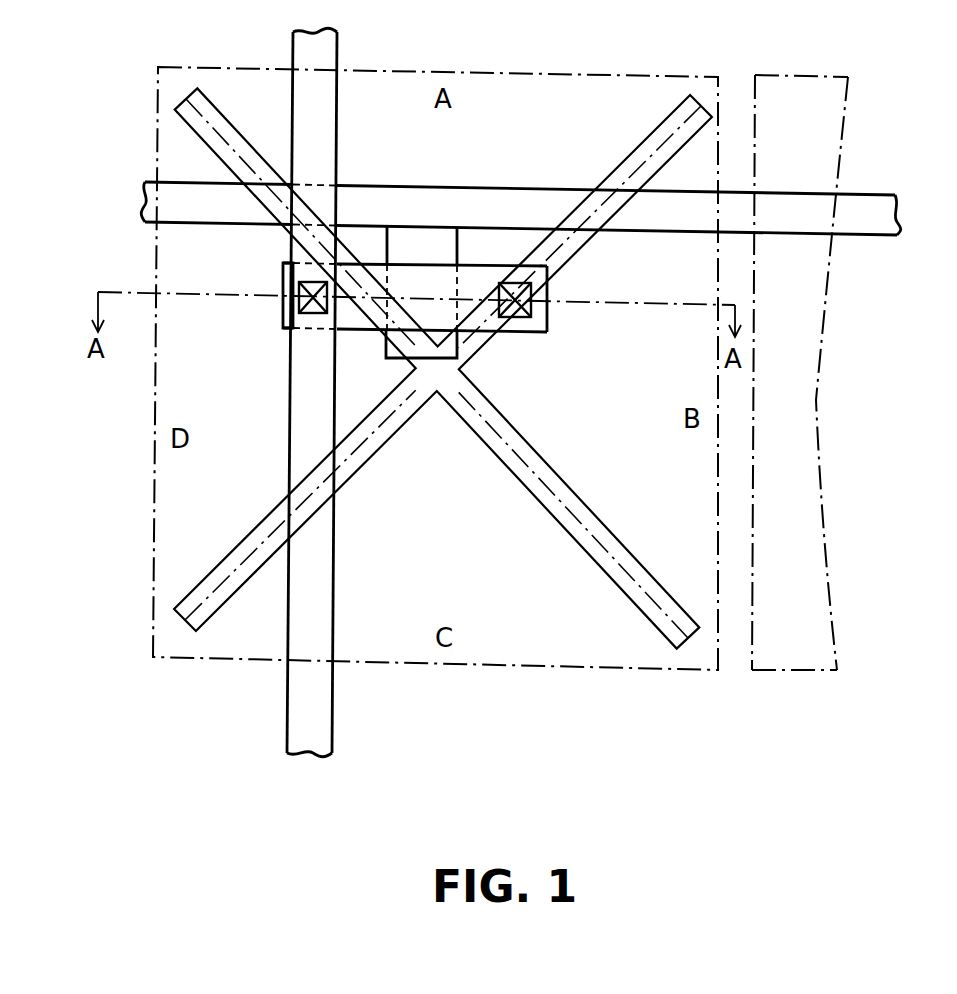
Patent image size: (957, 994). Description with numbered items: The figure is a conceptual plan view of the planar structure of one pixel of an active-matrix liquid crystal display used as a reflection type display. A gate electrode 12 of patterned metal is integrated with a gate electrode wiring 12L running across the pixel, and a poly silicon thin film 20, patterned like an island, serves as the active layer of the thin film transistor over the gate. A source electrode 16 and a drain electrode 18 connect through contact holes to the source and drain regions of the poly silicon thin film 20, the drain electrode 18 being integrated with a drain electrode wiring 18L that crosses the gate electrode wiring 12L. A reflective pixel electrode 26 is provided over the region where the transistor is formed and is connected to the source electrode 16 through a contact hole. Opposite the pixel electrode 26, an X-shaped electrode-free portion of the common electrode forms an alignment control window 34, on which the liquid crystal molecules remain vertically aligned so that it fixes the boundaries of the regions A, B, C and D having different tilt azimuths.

The gate electrode 12 is at (384, 348).
The gate electrode wiring 12L is at (866, 193).
The drain electrode wiring 18L is at (287, 725).
The source electrode 16 is at (534, 308).
The drain electrode 18 is at (315, 314).
The poly silicon thin film 20 is at (262, 322).
The pixel electrode 26 is at (718, 423).
The alignment control window 34 is at (472, 432).